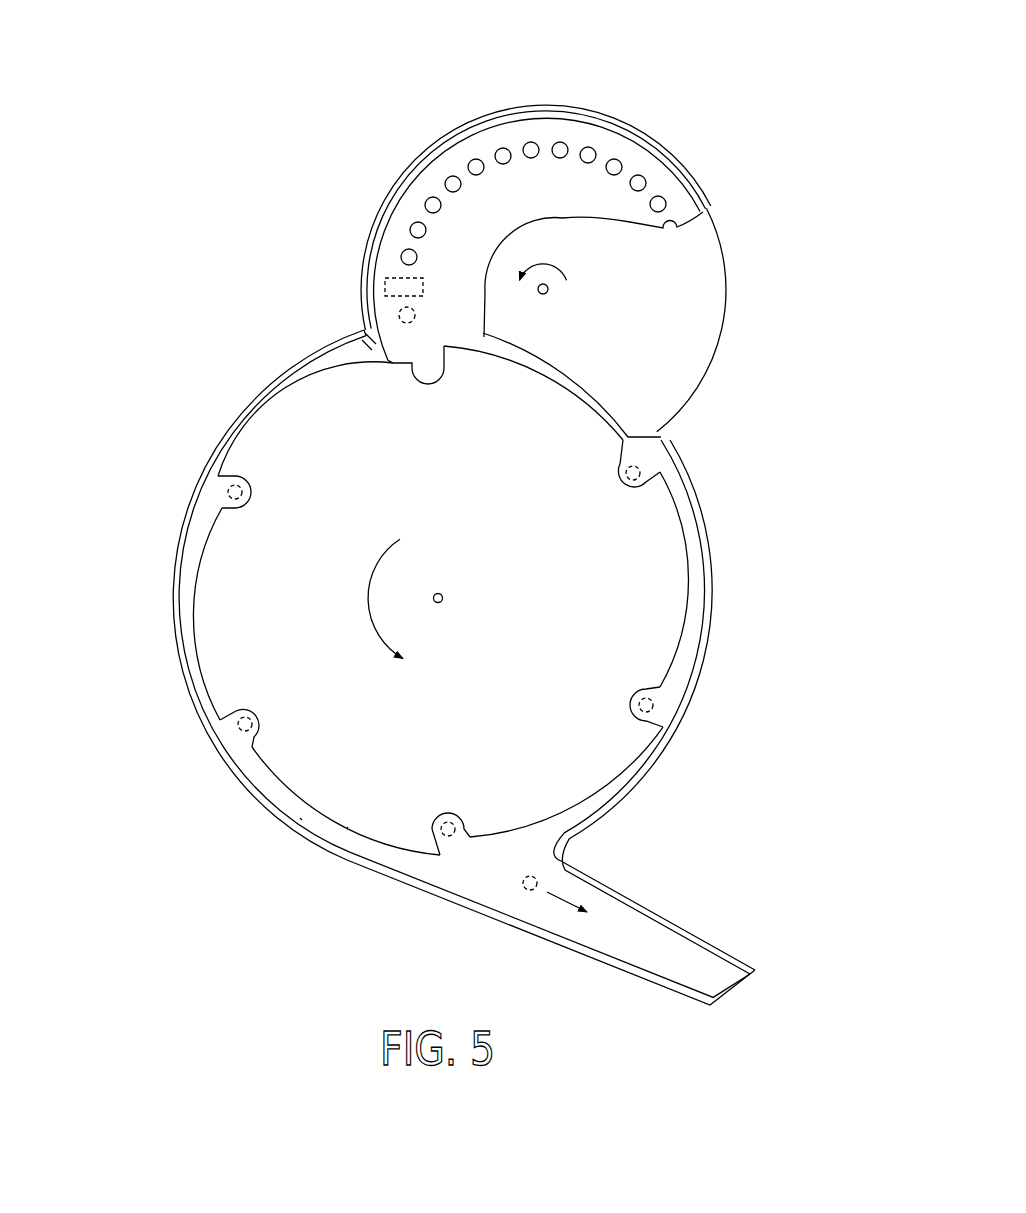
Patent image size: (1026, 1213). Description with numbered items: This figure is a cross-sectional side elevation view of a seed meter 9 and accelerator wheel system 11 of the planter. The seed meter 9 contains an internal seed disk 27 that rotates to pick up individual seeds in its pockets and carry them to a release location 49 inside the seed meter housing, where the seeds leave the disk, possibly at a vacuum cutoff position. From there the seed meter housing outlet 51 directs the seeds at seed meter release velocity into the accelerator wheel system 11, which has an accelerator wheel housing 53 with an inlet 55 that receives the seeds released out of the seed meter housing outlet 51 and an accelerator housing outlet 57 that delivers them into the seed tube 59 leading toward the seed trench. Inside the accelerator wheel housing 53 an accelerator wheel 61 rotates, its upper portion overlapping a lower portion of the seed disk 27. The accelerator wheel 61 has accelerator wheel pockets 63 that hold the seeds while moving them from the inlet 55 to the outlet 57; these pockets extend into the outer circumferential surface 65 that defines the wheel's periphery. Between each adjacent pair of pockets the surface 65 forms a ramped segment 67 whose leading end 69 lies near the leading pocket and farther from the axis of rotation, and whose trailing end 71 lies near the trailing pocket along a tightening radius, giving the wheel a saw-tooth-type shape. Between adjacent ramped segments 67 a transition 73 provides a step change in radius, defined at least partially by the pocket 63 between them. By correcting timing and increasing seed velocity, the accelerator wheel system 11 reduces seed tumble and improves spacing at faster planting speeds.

The seed meter 9 is at (553, 62).
The accelerator wheel system 11 is at (787, 608).
The seed disk 27 is at (582, 198).
The release location 49 is at (393, 243).
The seed meter housing outlet 51 is at (372, 290).
The accelerator wheel housing 53 is at (168, 548).
The inlet 55 is at (370, 357).
The accelerator housing outlet 57 is at (476, 875).
The seed tube 59 is at (597, 958).
The accelerator wheel 61 is at (330, 772).
The accelerator wheel pocket 63 is at (248, 508).
The outer circumferential surface 65 is at (313, 817).
The ramped segment 67 is at (300, 416).
The leading end 69 is at (212, 714).
The trailing end 71 is at (205, 518).
The transition 73 is at (213, 490).